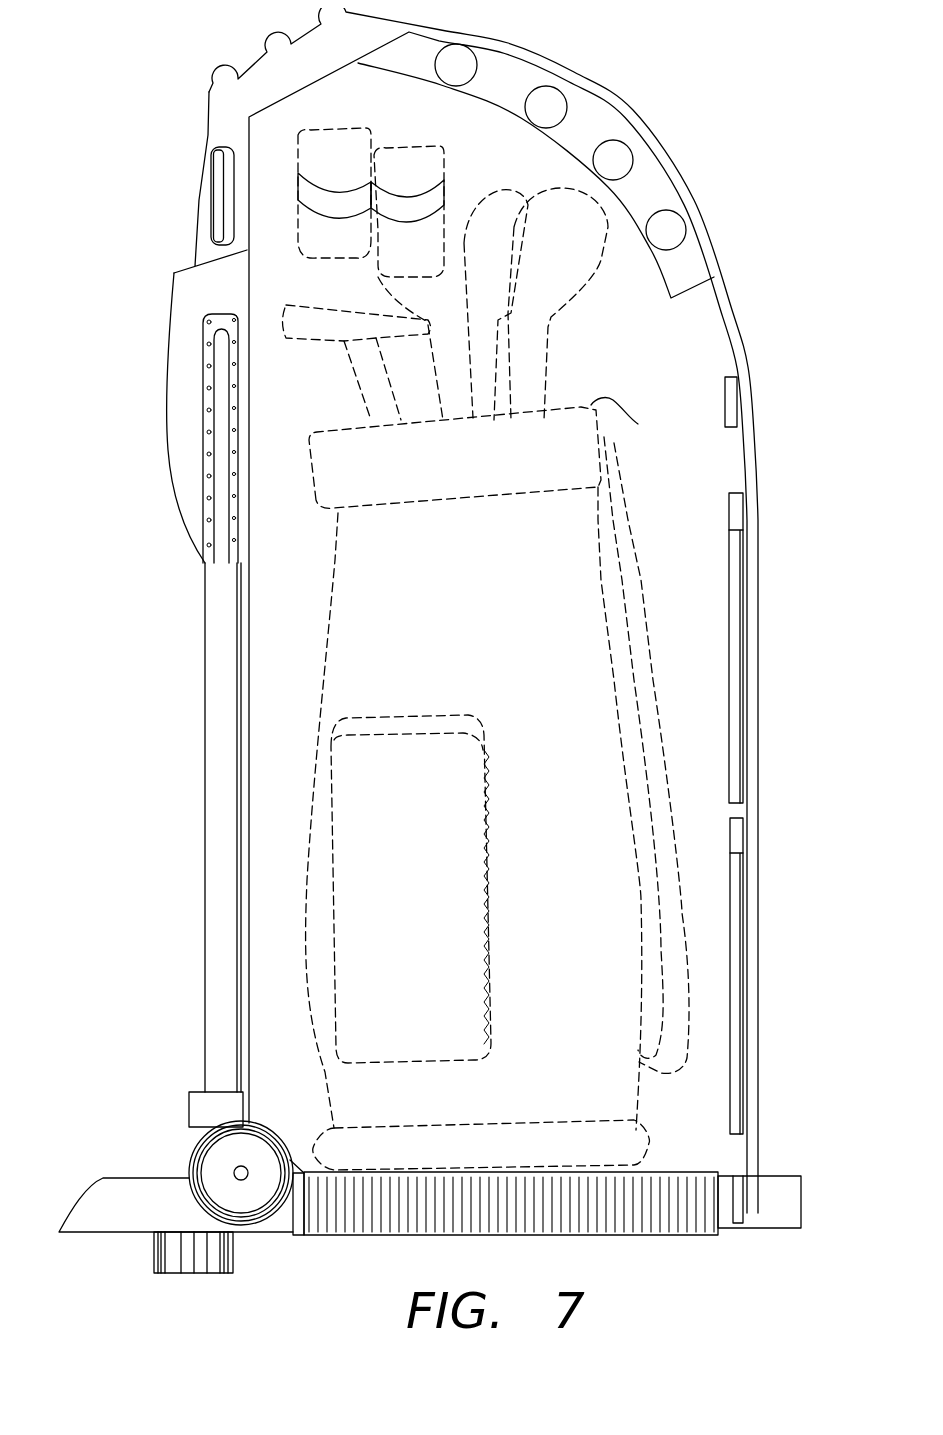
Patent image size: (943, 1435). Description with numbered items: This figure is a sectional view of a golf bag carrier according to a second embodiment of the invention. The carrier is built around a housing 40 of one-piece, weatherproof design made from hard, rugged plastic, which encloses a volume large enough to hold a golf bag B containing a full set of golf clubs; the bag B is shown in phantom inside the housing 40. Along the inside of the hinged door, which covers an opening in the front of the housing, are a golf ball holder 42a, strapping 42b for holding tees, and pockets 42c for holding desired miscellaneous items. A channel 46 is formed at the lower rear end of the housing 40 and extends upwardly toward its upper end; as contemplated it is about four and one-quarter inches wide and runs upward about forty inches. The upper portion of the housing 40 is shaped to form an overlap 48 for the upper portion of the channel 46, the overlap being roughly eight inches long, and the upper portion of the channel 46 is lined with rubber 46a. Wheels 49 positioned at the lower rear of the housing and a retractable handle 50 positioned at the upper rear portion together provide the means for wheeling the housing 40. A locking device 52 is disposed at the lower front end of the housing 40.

The housing 40 is at (253, 60).
The retractable handle 50 is at (210, 200).
The overlap 48 is at (165, 450).
The rubber 46a is at (208, 530).
The channel 46 is at (238, 885).
The wheels 49 is at (187, 1167).
The golf ball holder 42a is at (658, 274).
The strapping 42b is at (723, 407).
The pockets 42c is at (728, 702).
The locking device 52 is at (738, 1197).
The golf bag B is at (637, 424).